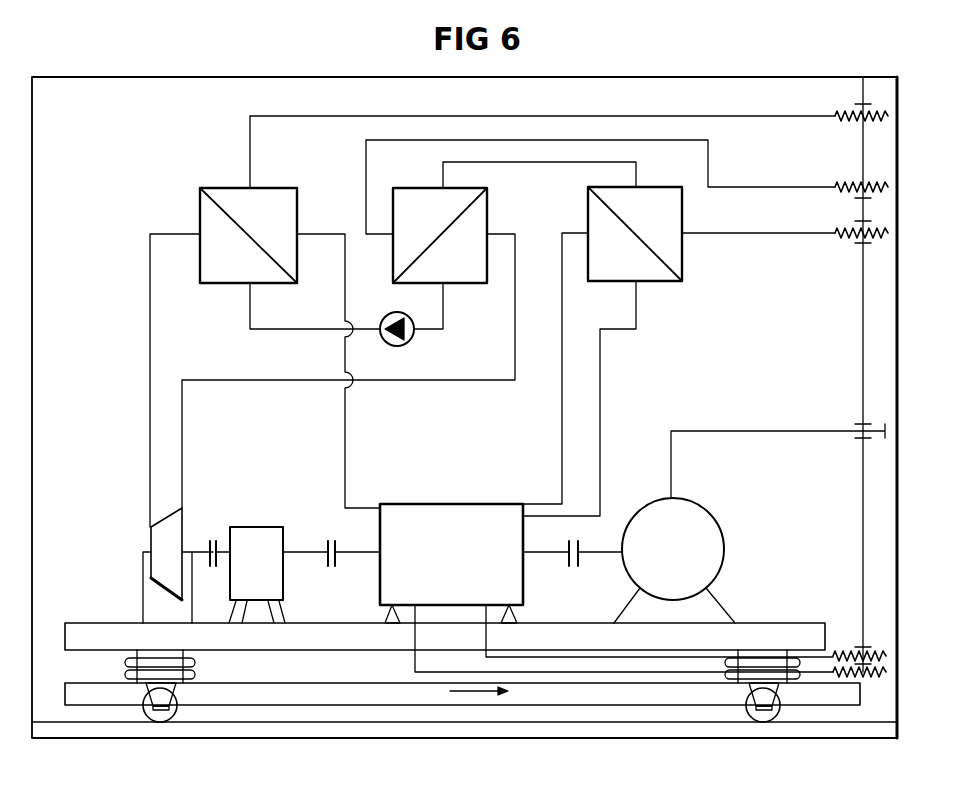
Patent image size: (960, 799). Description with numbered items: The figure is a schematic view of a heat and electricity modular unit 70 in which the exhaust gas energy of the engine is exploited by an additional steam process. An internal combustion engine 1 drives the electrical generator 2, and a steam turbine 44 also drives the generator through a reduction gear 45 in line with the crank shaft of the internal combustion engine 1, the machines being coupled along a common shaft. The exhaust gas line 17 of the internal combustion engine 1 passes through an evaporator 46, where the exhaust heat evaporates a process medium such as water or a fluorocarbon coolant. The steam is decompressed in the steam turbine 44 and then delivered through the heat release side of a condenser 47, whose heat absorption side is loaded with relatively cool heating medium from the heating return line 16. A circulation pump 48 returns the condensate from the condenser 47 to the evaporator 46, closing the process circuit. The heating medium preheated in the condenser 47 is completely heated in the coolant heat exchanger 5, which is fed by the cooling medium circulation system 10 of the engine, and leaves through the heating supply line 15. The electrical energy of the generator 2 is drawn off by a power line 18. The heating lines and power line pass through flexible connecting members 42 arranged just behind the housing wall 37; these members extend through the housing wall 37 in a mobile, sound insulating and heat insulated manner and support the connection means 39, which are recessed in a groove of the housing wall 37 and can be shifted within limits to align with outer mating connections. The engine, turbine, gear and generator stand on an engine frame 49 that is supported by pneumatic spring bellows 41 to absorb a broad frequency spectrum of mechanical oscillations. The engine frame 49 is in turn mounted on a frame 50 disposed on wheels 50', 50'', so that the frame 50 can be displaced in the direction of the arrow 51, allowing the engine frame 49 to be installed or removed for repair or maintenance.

The heat and electricity modular unit 70 is at (644, 70).
The housing wall 37 is at (899, 243).
The connection means 39 is at (890, 118).
The flexible connecting members 42 is at (840, 110).
The exhaust gas line 17 is at (557, 116).
The heating return line 16 is at (708, 158).
The heating supply line 15 is at (738, 238).
The evaporator 46 is at (208, 216).
The condenser 47 is at (474, 222).
The circulation pump 48 is at (410, 342).
The coolant heat exchanger 5 is at (668, 307).
The cooling medium circulation system 10 is at (562, 416).
The power line 18 is at (755, 430).
The internal combustion engine 1 is at (445, 503).
The generator 2 is at (712, 522).
The steam turbine 44 is at (157, 532).
The reduction gear 45 is at (256, 535).
The engine frame 49 is at (90, 630).
The spring support 41 is at (200, 672).
The frame 50 is at (462, 727).
The wheels 50' is at (168, 727).
The roller 50'' is at (778, 727).
The arrow 51 is at (470, 690).